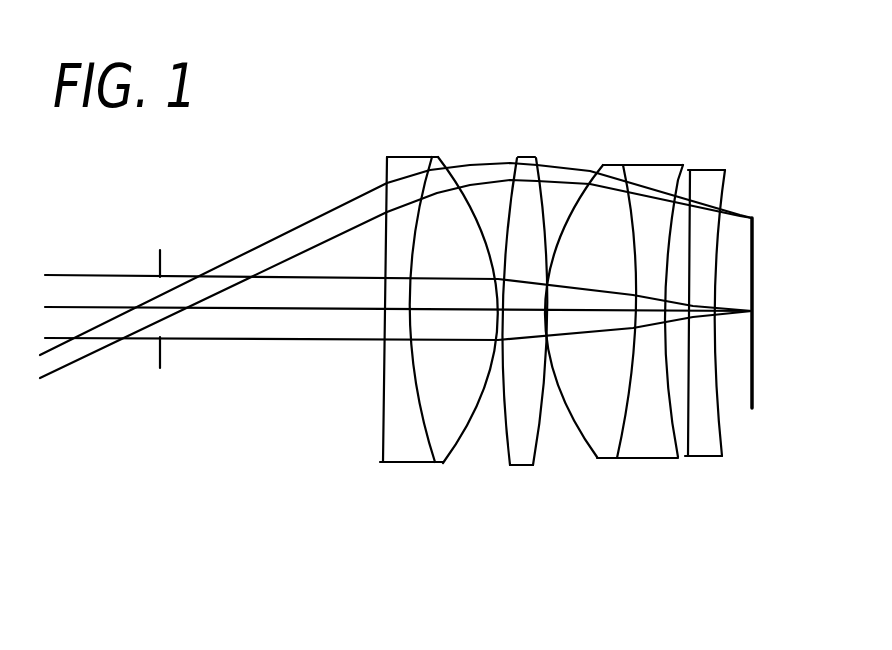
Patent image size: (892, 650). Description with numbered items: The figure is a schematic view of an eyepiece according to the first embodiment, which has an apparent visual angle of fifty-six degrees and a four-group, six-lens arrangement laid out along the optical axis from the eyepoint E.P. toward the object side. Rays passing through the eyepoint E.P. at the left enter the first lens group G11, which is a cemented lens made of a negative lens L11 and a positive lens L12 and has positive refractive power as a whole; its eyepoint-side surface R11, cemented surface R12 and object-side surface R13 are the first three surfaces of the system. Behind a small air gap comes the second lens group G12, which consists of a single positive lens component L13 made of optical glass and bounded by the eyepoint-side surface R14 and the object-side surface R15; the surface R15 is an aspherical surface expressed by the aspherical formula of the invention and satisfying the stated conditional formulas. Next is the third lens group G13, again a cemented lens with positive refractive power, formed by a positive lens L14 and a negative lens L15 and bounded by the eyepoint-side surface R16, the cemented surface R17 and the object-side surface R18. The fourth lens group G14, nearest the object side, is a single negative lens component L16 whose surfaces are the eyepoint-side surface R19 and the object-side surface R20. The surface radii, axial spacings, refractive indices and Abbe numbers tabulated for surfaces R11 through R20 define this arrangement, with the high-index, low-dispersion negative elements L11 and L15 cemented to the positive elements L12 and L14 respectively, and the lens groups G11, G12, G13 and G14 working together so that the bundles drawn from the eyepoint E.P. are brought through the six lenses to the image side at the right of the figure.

The eyepoint E.P. is at (163, 292).
The first lens group G11 is at (450, 49).
The second lens group G12 is at (537, 49).
The third lens group G13 is at (675, 49).
The fourth lens group G14 is at (737, 49).
The negative lens L11 is at (390, 294).
The positive lens L12 is at (460, 315).
The positive lens component L13 is at (505, 294).
The positive lens L14 is at (610, 294).
The negative lens L15 is at (654, 294).
The negative lens component L16 is at (717, 294).
The lens surface R11 is at (386, 187).
The lens surface R12 is at (407, 256).
The lens surface R13 is at (460, 278).
The lens surface R14 is at (505, 168).
The lens surface R15 is at (523, 279).
The lens surface R16 is at (590, 180).
The lens surface R17 is at (610, 275).
The lens surface R18 is at (653, 254).
The lens surface R19 is at (688, 170).
The lens surface R20 is at (736, 253).